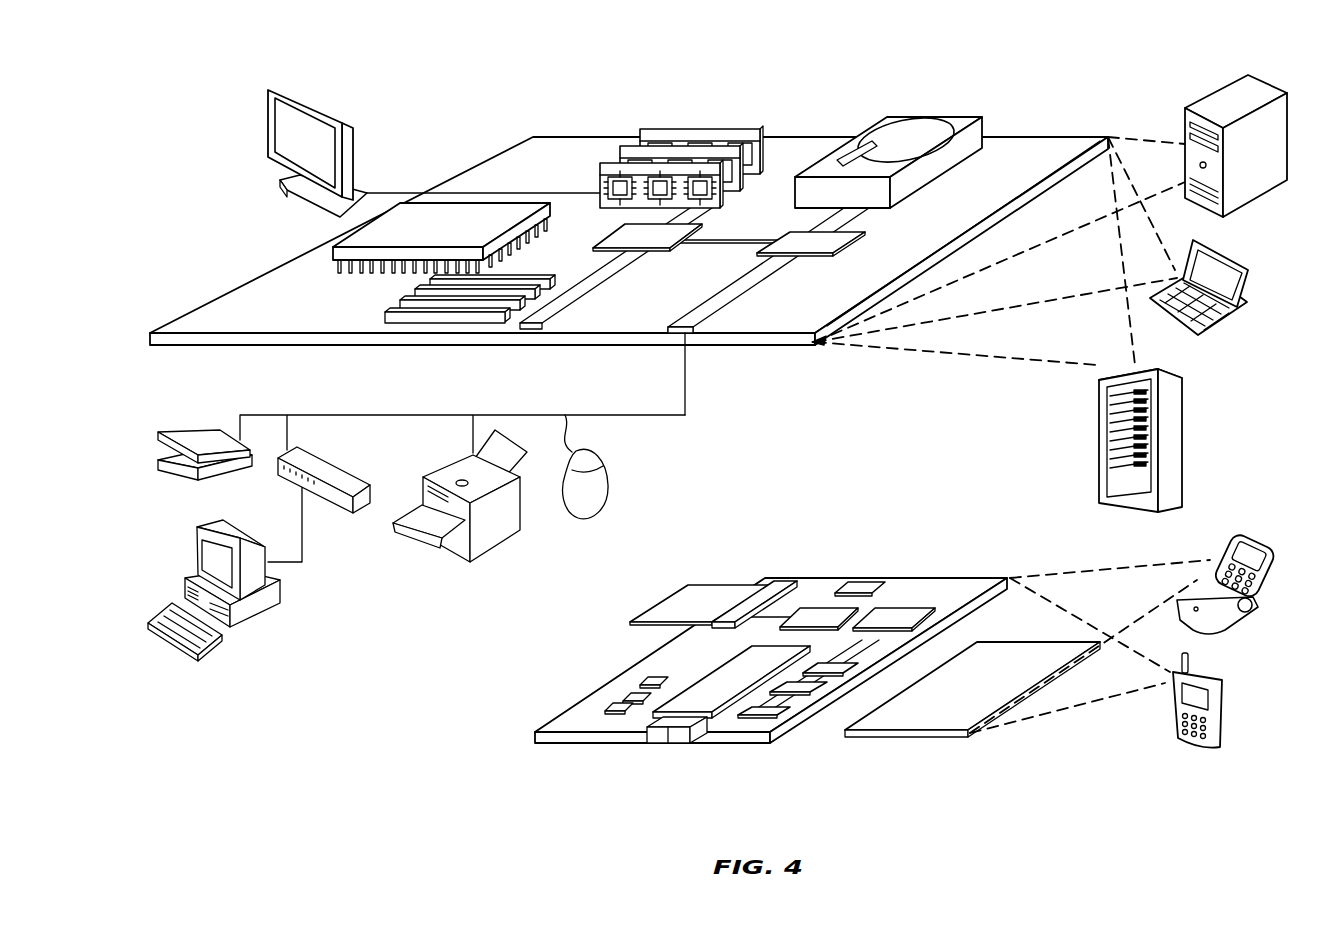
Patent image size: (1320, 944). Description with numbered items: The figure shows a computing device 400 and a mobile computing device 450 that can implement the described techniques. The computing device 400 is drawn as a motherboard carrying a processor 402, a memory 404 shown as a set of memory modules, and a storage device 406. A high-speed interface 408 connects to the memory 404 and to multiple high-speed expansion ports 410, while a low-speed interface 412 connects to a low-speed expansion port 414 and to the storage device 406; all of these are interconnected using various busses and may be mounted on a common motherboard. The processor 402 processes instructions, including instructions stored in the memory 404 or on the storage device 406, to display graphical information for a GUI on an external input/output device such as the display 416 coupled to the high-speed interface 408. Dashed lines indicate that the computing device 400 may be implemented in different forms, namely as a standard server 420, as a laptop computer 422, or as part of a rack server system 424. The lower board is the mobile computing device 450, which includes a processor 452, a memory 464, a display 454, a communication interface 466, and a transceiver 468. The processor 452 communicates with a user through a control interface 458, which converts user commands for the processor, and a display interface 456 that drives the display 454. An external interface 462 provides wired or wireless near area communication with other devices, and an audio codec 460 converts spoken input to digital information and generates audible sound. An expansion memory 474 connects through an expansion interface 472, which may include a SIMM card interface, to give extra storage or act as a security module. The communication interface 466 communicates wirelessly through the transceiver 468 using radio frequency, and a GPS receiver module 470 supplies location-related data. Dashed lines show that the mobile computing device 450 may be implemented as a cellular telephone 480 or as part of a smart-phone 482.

The computing device 400 is at (456, 112).
The processor 402 is at (333, 250).
The memory 404 is at (660, 130).
The storage device 406 is at (878, 118).
The high-speed interface 408 is at (623, 235).
The high-speed expansion ports 410 is at (400, 307).
The low-speed interface 412 is at (793, 238).
The low-speed expansion port 414 is at (698, 333).
The display 416 is at (270, 88).
The standard server 420 is at (1185, 124).
The laptop computer 422 is at (1250, 268).
The rack server system 424 is at (1099, 455).
The mobile computing device 450 is at (515, 742).
The processor 452 is at (707, 702).
The display 454 is at (933, 720).
The display interface 456 is at (770, 712).
The control interface 458 is at (830, 690).
The audio codec 460 is at (838, 678).
The external interface 462 is at (670, 743).
The memory 464 is at (622, 694).
The communication interface 466 is at (820, 610).
The transceiver 468 is at (893, 613).
The GPS receiver module 470 is at (868, 582).
The expansion interface 472 is at (752, 590).
The expansion memory 474 is at (683, 592).
The cellular telephone 480 is at (1215, 562).
The mobile handset 482 is at (1174, 705).